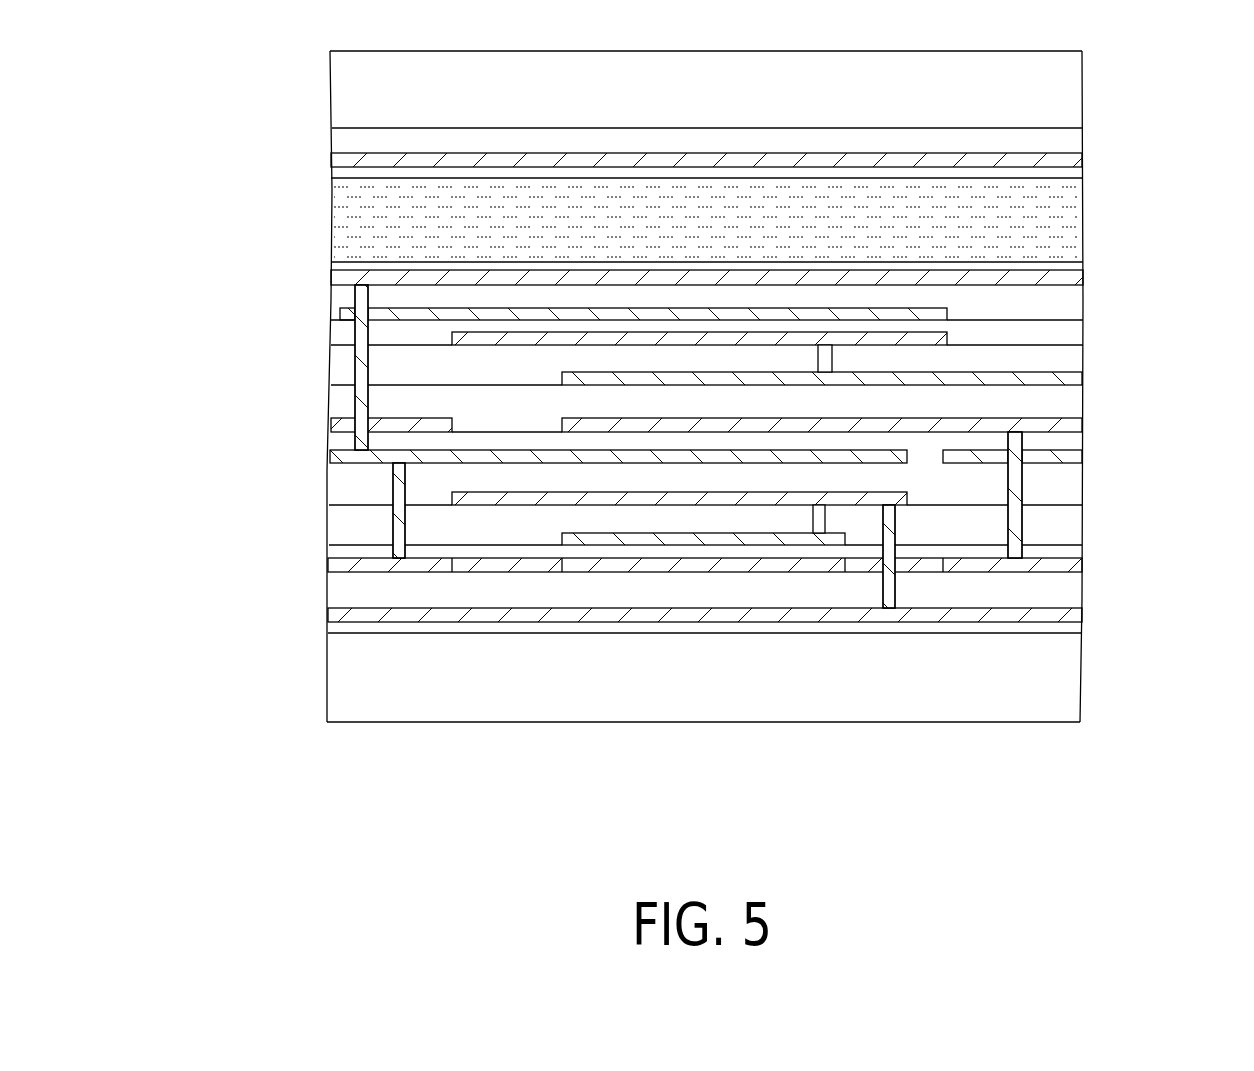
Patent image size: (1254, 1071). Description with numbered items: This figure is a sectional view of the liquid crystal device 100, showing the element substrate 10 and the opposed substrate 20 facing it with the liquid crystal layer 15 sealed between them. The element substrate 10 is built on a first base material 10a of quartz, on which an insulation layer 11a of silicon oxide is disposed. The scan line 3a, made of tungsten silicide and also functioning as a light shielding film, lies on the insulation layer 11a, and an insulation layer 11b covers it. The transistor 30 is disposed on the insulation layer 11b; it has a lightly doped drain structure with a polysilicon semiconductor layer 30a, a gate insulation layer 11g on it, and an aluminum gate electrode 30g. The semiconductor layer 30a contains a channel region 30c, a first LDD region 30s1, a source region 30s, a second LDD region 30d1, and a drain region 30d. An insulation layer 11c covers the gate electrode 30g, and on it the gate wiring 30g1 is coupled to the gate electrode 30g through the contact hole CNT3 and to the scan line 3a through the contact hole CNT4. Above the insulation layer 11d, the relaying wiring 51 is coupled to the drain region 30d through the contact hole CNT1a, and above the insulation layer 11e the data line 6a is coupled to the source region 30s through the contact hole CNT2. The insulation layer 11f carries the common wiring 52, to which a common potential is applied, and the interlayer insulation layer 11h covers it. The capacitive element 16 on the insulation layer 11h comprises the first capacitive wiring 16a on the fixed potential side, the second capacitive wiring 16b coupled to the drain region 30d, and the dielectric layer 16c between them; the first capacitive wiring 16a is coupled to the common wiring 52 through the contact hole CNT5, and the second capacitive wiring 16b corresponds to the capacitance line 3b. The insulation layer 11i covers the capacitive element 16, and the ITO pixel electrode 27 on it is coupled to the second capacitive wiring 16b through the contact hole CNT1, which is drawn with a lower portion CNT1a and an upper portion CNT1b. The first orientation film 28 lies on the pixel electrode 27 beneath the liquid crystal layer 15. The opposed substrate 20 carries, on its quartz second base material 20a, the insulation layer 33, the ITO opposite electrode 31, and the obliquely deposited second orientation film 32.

The liquid crystal device 100 is at (1214, 77).
The opposed substrate 20 is at (1157, 50).
The second base material 20a is at (1075, 83).
The insulation layer 33 is at (1075, 137).
The opposite electrode 31 is at (1075, 158).
The second orientation film 32 is at (1075, 172).
The liquid crystal layer 15 is at (1075, 212).
The element substrate 10 is at (1157, 260).
The first orientation film 28 is at (1075, 267).
The pixel electrode 27 is at (1075, 281).
The insulation layer 11i is at (1075, 313).
The capacitive element 16 is at (792, 211).
The first capacitive wiring 16a is at (775, 340).
The second capacitive wiring 16b is at (643, 271).
The capacitance line 3b is at (658, 307).
The dielectric layer 16c is at (733, 330).
The insulation layer 11h is at (1075, 357).
The common wiring 52 is at (626, 378).
The contact hole CNT5 is at (833, 360).
The insulation layer 11f is at (1075, 400).
The data line 6a is at (706, 421).
The relaying wiring 51 is at (497, 459).
The insulation layer 11e is at (1075, 440).
The contact hole CNT1 is at (225, 355).
The contact hole CNT1a is at (393, 478).
The upper contact hole CNT1b is at (355, 363).
The insulation layer 11d is at (1075, 480).
The gate wiring 30g1 is at (706, 494).
The contact hole CNT2 is at (1008, 480).
The insulation layer 11c is at (1075, 523).
The contact hole CNT3 is at (813, 521).
The contact hole CNT4 is at (895, 519).
The gate electrode 30g is at (712, 546).
The gate insulation layer 11g is at (1075, 548).
The transistor 30 is at (1027, 768).
The semiconductor layer 30a is at (1075, 568).
The drain region 30d is at (430, 572).
The second LDD region 30d1 is at (517, 572).
The channel region 30c is at (653, 572).
The first LDD region 30s1 is at (867, 565).
The source region 30s is at (997, 565).
The insulation layer 11b is at (1075, 593).
The scan line 3a is at (1075, 615).
The insulation layer 11a is at (1075, 637).
The first base material 10a is at (1075, 678).